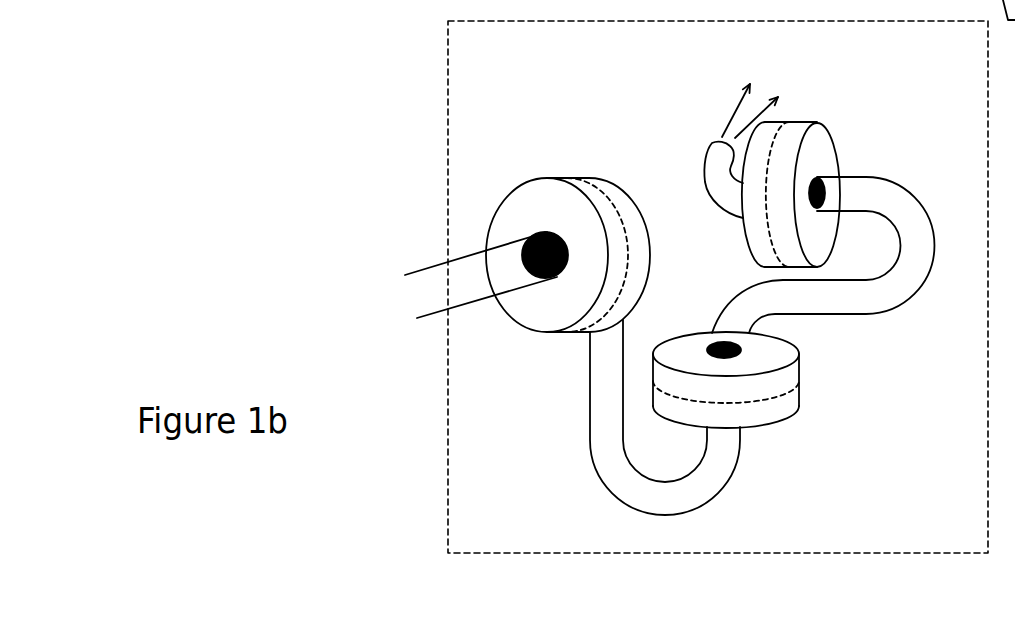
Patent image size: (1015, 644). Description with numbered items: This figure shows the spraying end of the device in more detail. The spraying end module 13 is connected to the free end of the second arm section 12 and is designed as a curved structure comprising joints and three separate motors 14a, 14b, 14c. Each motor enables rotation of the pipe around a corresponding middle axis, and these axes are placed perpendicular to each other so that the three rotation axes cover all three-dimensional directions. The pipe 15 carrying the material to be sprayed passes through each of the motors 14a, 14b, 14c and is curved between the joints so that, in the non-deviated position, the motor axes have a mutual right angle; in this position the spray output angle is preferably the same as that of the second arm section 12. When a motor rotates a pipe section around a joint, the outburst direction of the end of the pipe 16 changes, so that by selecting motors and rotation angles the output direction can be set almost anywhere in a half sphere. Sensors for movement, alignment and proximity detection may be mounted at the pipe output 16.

The second arm section 12 is at (423, 263).
The spraying end module 13 is at (448, 72).
The motor 14a is at (568, 177).
The motor 14b is at (778, 423).
The motor 14c is at (832, 137).
The pipe 15 is at (857, 313).
The end of the pipe 16 is at (712, 142).